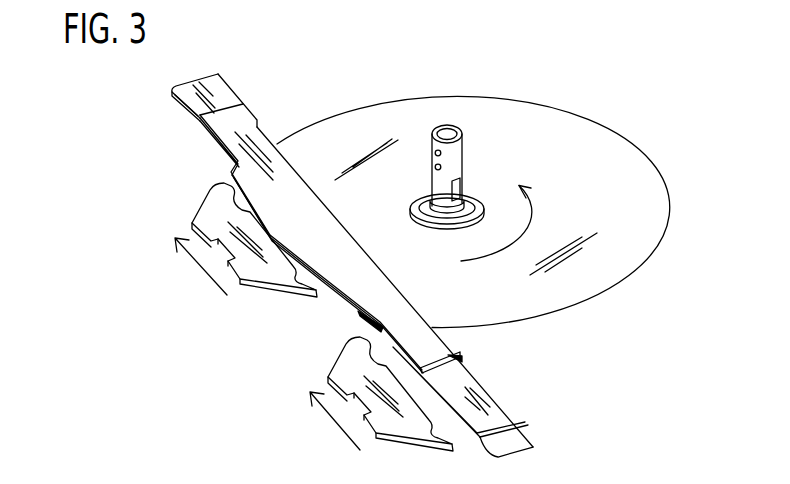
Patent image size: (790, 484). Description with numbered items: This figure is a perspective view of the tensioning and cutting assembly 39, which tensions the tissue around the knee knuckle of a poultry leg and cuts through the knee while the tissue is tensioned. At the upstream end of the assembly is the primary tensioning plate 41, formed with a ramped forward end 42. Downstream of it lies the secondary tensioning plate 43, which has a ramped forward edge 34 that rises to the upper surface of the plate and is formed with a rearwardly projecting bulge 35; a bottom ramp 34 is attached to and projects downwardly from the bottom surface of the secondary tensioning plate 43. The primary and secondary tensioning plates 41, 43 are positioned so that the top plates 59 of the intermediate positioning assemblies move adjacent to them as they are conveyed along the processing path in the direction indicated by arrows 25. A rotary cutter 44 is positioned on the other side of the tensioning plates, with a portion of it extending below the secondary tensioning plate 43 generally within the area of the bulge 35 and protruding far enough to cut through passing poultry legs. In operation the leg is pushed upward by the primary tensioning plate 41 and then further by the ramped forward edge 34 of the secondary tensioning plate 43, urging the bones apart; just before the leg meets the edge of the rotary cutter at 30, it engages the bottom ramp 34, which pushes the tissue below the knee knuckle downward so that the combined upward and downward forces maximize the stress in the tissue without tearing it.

The arrows 25 is at (198, 267).
The edge of the rotary cutter 30 is at (333, 309).
The ramped forward edge / bottom ramp 34 is at (370, 323).
The rearwardly projecting bulge 35 is at (298, 246).
The tensioning and cutting assembly 39 is at (596, 349).
The primary tensioning plate 41 is at (492, 398).
The ramped forward end 42 is at (518, 435).
The secondary tensioning plate 43 is at (437, 347).
The rotary cutter 44 is at (591, 181).
The top plates 59 is at (208, 217).